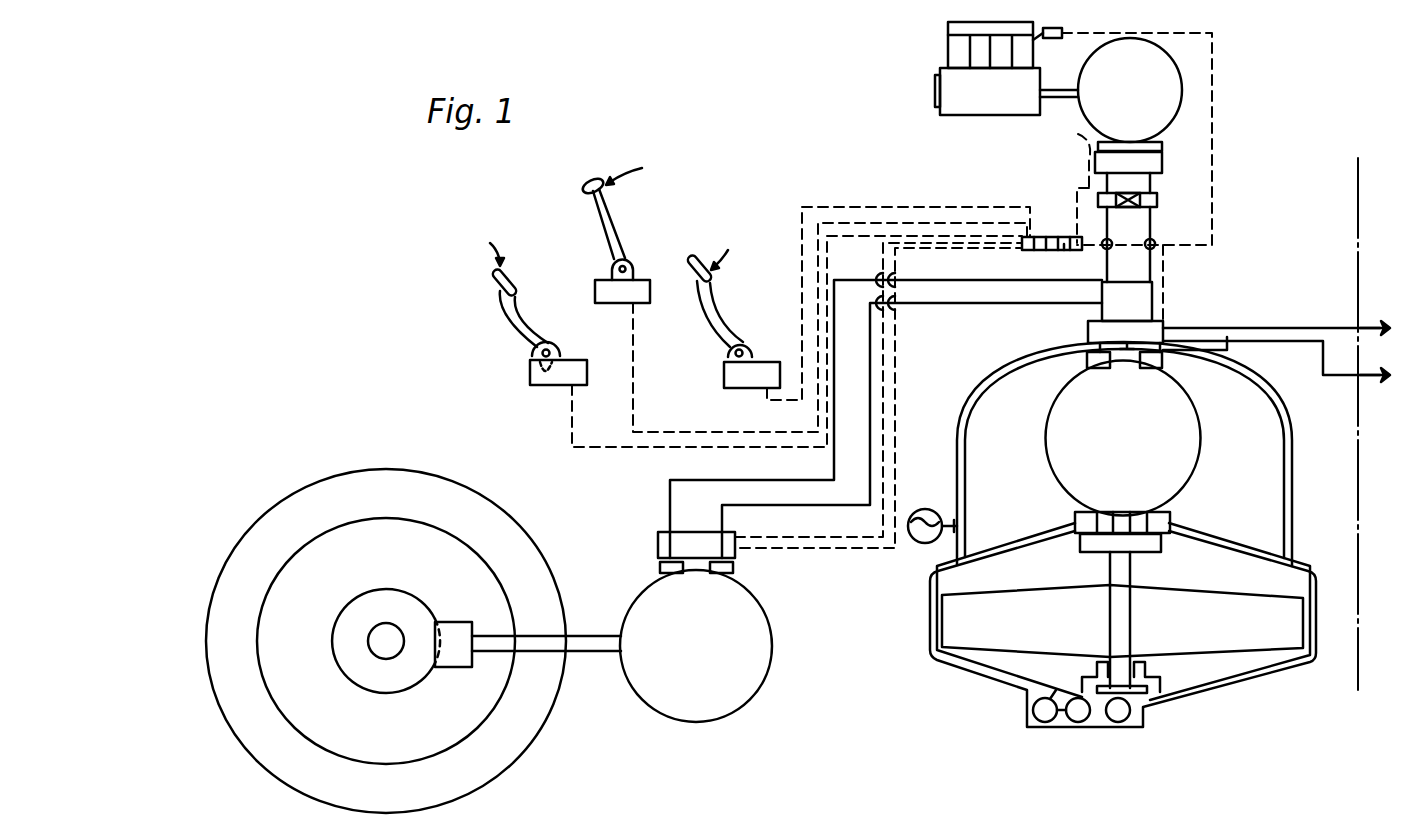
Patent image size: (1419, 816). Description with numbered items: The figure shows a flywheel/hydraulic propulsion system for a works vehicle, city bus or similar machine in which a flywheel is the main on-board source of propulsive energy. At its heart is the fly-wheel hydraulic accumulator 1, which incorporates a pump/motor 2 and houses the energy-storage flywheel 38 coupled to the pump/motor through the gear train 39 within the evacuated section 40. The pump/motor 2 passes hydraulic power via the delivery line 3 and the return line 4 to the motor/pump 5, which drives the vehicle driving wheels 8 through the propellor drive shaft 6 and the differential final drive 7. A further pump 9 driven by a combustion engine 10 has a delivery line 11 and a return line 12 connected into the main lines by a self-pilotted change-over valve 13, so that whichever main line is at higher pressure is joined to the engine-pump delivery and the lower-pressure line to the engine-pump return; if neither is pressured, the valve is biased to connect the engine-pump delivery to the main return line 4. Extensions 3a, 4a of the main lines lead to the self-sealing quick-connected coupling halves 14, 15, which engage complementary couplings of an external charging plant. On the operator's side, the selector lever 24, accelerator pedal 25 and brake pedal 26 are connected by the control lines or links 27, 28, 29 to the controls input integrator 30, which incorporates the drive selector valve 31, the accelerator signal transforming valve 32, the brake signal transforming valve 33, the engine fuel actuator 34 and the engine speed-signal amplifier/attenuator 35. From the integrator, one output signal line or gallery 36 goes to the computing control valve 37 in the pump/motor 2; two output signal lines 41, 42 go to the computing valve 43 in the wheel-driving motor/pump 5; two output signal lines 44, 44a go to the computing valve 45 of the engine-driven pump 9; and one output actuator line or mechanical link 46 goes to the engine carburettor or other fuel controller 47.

The fly-wheel hydraulic accumulator 1 is at (1248, 413).
The pump/motor 2 is at (1163, 393).
The delivery line 3 is at (1122, 230).
The extension of main delivery line 3a is at (1265, 343).
The return line 4 is at (1169, 227).
The extension of main return line 4a is at (1262, 326).
The motor/pump 5 is at (745, 615).
The propellor drive shaft 6 is at (586, 640).
The differential final drive 7 is at (399, 600).
The vehicle driving wheels 8 is at (540, 697).
The pump 9 is at (1157, 67).
The combustion engine 10 is at (953, 88).
The delivery line 11 is at (1113, 186).
The return line 12 is at (1155, 166).
The self-pilotted change-over valve 13 is at (1158, 200).
The coupling half 14 is at (1387, 380).
The coupling half 15 is at (1388, 320).
The operator's selector lever 24 is at (613, 216).
The accelerator pedal 25 is at (710, 303).
The brake pedal 26 is at (515, 313).
The control line or link 27 is at (636, 368).
The control line or link 28 is at (829, 207).
The control line or link 29 is at (640, 450).
The controls input integrator 30 is at (1025, 251).
The drive selector valve 31 is at (1031, 236).
The accelerator signal transforming valve 32 is at (1043, 236).
The brake signal transforming valve 33 is at (1056, 236).
The engine fuel actuator 34 is at (1057, 251).
The engine speed-signal amplifier/attenuator 35 is at (1070, 251).
The output signal line or gallery 36 is at (1163, 265).
The computing control valve 37 is at (1135, 330).
The energy-storage flywheel 38 is at (1257, 640).
The gear train 39 is at (1161, 549).
The evacuated section 40 is at (1290, 583).
The output signal line 41 is at (896, 382).
The output signal line 42 is at (896, 427).
The computing valve 43 is at (736, 549).
The output signal line 44 is at (1080, 141).
The output signal line 44a is at (1084, 175).
The computing valve 45 is at (1158, 161).
The output actuator line or mechanical link 46 is at (1213, 70).
The engine carburettor or fuel controller 47 is at (1051, 39).